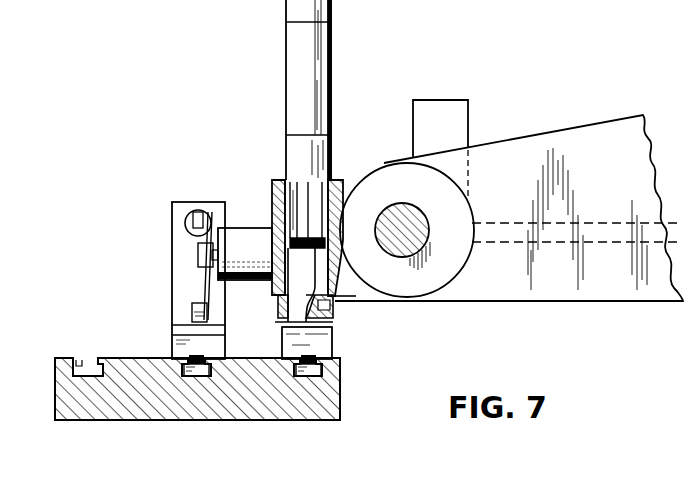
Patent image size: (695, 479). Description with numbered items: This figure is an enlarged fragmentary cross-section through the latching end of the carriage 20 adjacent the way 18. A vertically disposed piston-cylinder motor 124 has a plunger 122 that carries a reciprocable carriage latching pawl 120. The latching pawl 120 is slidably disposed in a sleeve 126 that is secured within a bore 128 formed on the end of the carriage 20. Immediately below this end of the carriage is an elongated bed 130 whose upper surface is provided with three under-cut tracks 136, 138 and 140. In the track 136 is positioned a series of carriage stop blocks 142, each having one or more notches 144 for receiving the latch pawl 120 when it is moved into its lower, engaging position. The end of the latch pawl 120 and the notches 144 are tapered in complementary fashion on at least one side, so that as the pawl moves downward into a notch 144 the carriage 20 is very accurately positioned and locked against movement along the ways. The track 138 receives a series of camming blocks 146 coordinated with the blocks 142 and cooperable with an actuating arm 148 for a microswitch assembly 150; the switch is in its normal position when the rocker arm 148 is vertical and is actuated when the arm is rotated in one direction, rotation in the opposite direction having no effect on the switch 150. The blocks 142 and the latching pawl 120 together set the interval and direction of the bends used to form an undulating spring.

The way 18 is at (416, 217).
The carriage 20 is at (578, 304).
The carriage latching pawl 120 is at (283, 320).
The plunger 122 is at (322, 181).
The piston-cylinder motor 124 is at (313, 75).
The sleeve 126 is at (344, 280).
The bore 128 is at (322, 216).
The bed 130 is at (158, 420).
The track 136 is at (310, 378).
The track 138 is at (205, 378).
The track 140 is at (86, 358).
The carriage stop block 142 is at (333, 353).
The notch 144 is at (336, 325).
The camming block 146 is at (176, 342).
The actuating arm 148 is at (207, 277).
The microswitch assembly 150 is at (250, 240).